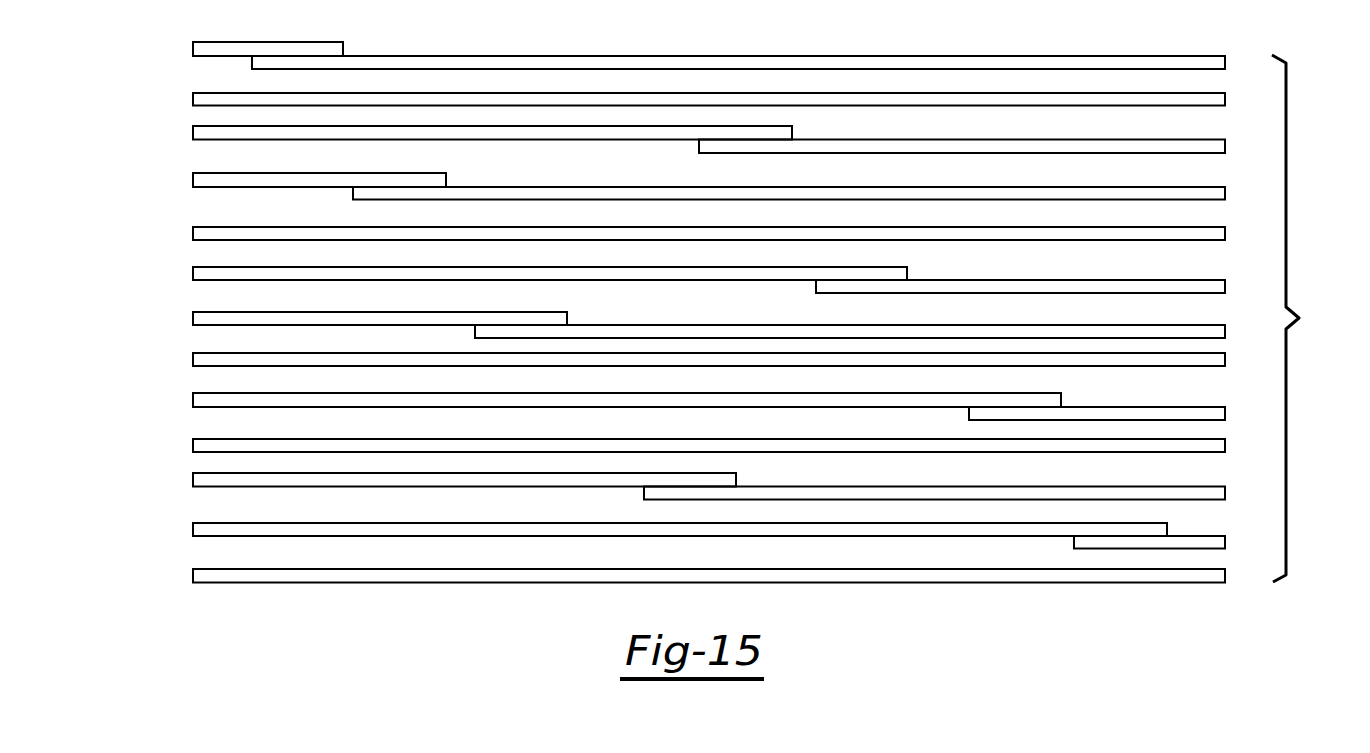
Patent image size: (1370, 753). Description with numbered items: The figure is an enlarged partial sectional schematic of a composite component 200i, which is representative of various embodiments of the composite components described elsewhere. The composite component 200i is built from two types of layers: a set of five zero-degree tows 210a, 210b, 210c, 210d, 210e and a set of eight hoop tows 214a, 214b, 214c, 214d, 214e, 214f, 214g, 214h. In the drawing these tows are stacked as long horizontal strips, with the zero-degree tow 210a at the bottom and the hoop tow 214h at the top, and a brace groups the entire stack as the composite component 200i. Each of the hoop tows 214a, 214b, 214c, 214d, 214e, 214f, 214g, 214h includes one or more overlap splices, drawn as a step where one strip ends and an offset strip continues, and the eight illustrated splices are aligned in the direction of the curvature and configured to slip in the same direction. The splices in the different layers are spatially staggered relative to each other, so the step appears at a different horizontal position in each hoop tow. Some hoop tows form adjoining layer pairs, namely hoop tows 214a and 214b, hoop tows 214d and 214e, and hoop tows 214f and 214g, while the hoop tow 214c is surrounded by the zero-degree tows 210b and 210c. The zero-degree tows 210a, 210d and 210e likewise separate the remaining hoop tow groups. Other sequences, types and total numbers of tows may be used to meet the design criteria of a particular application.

The hoop tow 214h is at (193, 52).
The 0-degree tow 210e is at (193, 102).
The hoop tow 214g is at (193, 136).
The hoop tow 214f is at (193, 183).
The 0-degree tow 210d is at (193, 236).
The hoop tow 214e is at (193, 276).
The hoop tow 214d is at (193, 322).
The 0-degree tow 210c is at (193, 362).
The hoop tow 214c is at (193, 403).
The 0-degree tow 210b is at (193, 448).
The hoop tow 214b is at (193, 483).
The hoop tow 214a is at (193, 532).
The 0-degree tow 210a is at (193, 579).
The composite component 200i is at (1310, 318).